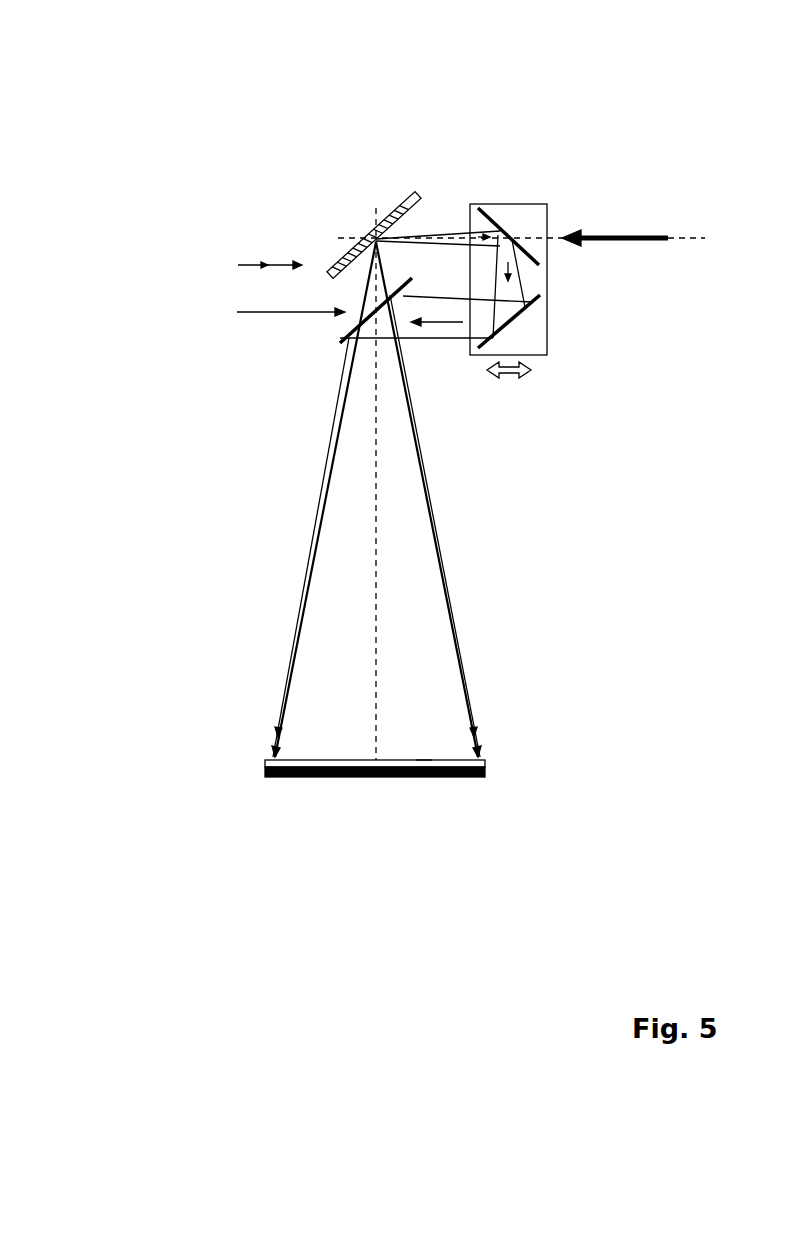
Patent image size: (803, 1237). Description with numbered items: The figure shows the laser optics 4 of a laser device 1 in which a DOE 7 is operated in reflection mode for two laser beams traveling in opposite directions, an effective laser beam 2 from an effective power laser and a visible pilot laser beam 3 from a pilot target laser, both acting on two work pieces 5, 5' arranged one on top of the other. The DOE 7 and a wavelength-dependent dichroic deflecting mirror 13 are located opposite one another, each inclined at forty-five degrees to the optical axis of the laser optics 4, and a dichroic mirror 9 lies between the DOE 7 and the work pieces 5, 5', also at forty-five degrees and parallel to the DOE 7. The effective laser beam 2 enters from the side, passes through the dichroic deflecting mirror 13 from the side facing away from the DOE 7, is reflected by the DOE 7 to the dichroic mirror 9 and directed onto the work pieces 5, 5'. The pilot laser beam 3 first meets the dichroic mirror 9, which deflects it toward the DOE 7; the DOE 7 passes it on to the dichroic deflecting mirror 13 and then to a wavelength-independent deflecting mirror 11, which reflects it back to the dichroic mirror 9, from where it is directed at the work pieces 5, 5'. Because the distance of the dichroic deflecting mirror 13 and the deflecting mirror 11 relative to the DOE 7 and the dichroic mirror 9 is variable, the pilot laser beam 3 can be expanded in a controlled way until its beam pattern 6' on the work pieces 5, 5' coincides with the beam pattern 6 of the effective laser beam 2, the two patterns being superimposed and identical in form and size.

The laser device 1 is at (145, 118).
The effective laser beam 2 is at (625, 237).
The pilot laser beam 3 is at (265, 312).
The laser optics 4 is at (253, 268).
The work piece 5 is at (354, 810).
The work piece 5' is at (328, 770).
The beam pattern 6 is at (480, 697).
The beam pattern 6' is at (480, 697).
The DOE 7 is at (393, 212).
The dichroic mirror 9 is at (342, 336).
The wavelength-independent deflecting mirror 11 is at (526, 320).
The dichroic deflecting mirror 13 is at (482, 204).